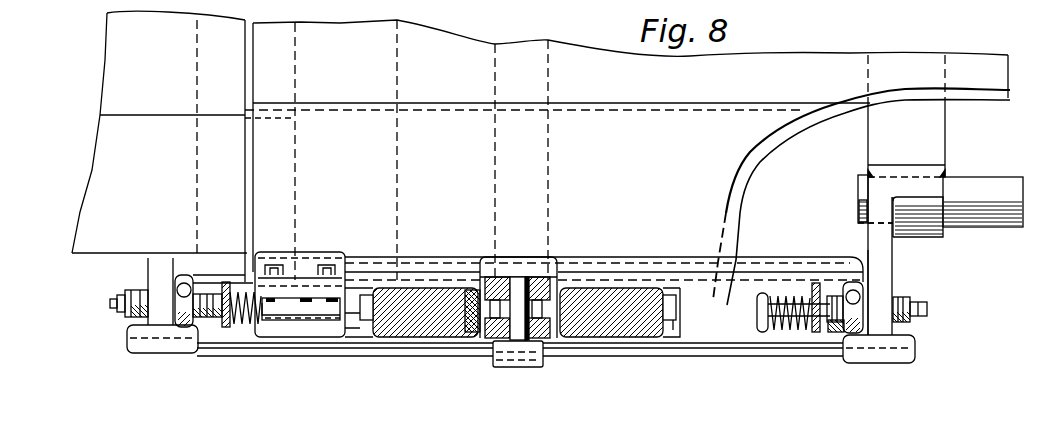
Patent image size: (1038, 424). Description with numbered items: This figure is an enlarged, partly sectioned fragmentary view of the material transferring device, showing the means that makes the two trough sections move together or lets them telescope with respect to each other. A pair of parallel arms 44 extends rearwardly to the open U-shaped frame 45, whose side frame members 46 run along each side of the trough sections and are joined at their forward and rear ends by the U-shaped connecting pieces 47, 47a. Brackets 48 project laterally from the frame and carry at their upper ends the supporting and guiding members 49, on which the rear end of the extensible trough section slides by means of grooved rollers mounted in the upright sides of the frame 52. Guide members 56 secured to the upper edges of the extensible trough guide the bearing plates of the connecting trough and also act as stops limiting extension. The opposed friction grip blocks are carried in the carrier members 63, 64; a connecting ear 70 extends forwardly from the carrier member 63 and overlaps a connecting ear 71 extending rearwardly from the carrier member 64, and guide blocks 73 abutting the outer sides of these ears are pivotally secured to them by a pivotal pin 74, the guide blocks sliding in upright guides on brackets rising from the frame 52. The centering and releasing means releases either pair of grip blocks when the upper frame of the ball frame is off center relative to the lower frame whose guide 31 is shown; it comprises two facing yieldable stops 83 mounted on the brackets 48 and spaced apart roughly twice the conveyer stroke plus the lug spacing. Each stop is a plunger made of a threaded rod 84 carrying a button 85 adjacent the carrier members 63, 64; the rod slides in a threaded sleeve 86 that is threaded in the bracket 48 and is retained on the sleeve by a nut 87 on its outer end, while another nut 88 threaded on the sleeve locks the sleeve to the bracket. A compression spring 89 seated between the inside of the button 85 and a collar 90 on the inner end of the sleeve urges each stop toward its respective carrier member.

The guide 31 is at (493, 362).
The arm 44 is at (1000, 228).
The frame 45 is at (946, 150).
The side frame member 46 is at (770, 257).
The connecting piece 47 is at (868, 162).
The connecting piece 47a is at (200, 172).
The bracket 48 is at (160, 262).
The supporting and guiding member 49 is at (830, 362).
The frame 52 is at (549, 143).
The guide member 56 is at (300, 276).
The carrier member 63 is at (405, 300).
The carrier member 64 is at (600, 300).
The connecting ear 70 is at (487, 284).
The connecting ear 71 is at (556, 300).
The guide block 73 is at (528, 268).
The pivotal pin 74 is at (518, 275).
The yieldable stop 83 is at (822, 290).
The threaded rod 84 is at (116, 306).
The button 85 is at (280, 308).
The threaded sleeve 86 is at (834, 332).
The nut 87 is at (128, 290).
The nut 88 is at (190, 275).
The compression spring 89 is at (236, 324).
The collar 90 is at (227, 282).